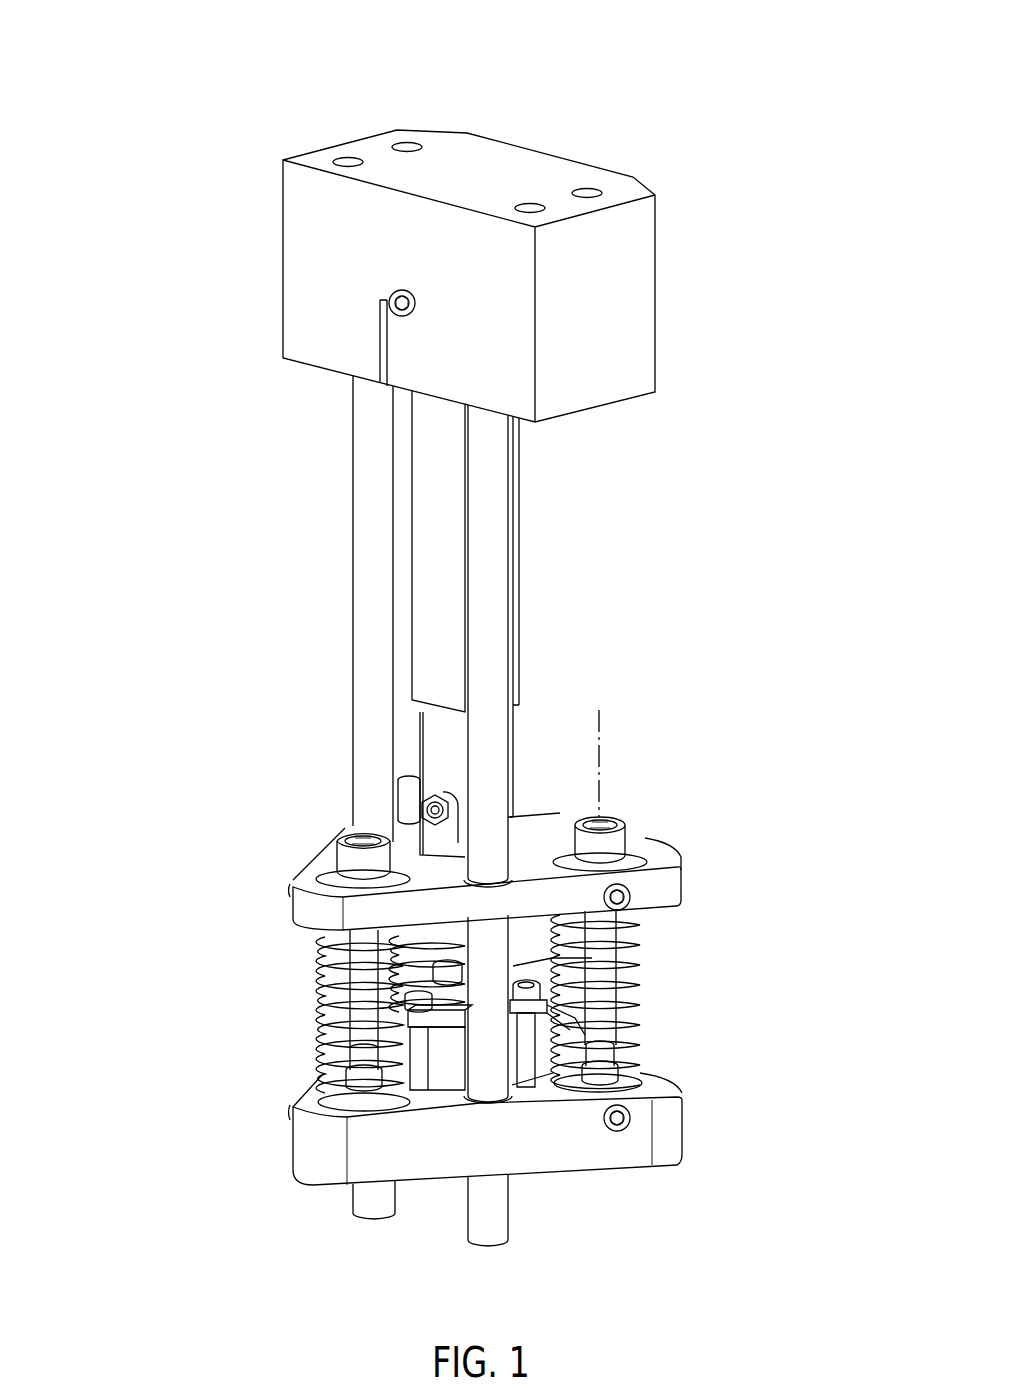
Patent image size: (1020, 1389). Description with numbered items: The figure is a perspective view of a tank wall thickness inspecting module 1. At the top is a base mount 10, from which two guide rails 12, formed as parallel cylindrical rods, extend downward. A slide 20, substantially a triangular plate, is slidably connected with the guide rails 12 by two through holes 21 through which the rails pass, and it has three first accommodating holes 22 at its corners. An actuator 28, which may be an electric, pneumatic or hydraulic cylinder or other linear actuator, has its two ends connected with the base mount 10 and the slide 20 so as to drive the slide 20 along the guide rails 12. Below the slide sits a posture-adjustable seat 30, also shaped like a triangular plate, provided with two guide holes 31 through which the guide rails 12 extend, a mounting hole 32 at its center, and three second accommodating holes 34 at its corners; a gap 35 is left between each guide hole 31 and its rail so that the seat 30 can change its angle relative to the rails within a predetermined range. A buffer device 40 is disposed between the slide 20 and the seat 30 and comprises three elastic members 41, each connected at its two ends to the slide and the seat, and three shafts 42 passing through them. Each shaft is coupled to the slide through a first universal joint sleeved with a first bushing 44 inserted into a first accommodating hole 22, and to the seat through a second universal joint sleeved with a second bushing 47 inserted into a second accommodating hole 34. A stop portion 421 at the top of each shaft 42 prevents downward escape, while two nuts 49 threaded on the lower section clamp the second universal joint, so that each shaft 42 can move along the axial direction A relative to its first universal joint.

The tank wall thickness inspecting module 1 is at (230, 141).
The base mount 10 is at (622, 290).
The guide rails 12 is at (370, 522).
The slide 20 is at (538, 835).
The through holes 21 is at (503, 880).
The first accommodating holes 22 is at (632, 853).
The actuator 28 is at (512, 603).
The posture-adjustable seat 30 is at (593, 1152).
The guide holes 31 is at (472, 1100).
The mounting hole 32 is at (440, 1100).
The second accommodating holes 34 is at (627, 1093).
The gap 35 is at (510, 1100).
The buffer device 40 is at (142, 772).
The elastic members 41 is at (336, 985).
The shafts 42 is at (365, 977).
The stop portion 421 is at (360, 860).
The first bushing 44 is at (333, 876).
The second bushing 47 is at (320, 1100).
The nuts 49 is at (372, 1090).
The axial direction A is at (600, 723).